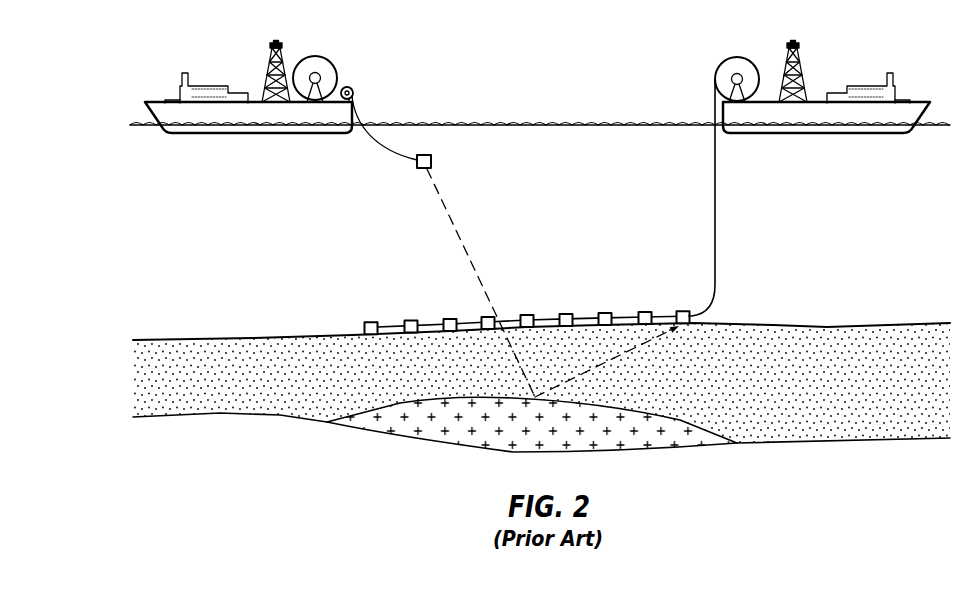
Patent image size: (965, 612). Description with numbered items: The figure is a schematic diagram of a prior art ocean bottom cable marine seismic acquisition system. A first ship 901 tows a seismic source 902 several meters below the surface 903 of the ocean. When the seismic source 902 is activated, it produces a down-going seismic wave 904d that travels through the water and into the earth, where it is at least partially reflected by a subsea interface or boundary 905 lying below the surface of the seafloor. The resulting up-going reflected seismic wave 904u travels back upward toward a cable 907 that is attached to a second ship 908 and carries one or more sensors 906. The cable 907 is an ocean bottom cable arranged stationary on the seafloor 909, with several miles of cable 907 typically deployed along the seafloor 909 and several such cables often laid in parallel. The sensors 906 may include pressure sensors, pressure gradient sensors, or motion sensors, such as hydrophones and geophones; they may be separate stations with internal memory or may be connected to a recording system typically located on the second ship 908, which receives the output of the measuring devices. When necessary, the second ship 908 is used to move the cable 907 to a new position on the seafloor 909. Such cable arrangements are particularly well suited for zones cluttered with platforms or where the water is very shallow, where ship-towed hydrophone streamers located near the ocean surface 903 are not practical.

The first ship 901 is at (150, 103).
The seismic source 902 is at (418, 168).
The surface of the ocean 903 is at (536, 123).
The down-going seismic wave 904d is at (458, 232).
The up-going reflected seismic wave 904u is at (623, 354).
The subsea interface or boundary 905 is at (445, 400).
The sensors 906 is at (684, 311).
The cable 907 is at (716, 208).
The second ship 908 is at (918, 104).
The seafloor 909 is at (255, 338).